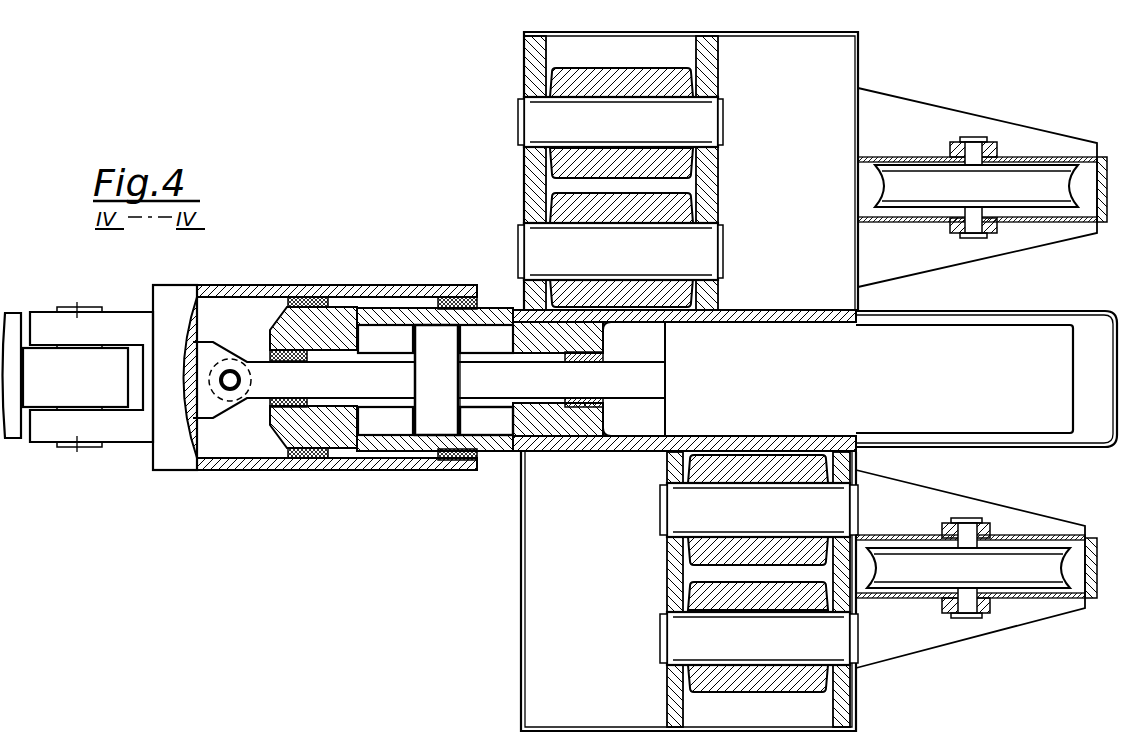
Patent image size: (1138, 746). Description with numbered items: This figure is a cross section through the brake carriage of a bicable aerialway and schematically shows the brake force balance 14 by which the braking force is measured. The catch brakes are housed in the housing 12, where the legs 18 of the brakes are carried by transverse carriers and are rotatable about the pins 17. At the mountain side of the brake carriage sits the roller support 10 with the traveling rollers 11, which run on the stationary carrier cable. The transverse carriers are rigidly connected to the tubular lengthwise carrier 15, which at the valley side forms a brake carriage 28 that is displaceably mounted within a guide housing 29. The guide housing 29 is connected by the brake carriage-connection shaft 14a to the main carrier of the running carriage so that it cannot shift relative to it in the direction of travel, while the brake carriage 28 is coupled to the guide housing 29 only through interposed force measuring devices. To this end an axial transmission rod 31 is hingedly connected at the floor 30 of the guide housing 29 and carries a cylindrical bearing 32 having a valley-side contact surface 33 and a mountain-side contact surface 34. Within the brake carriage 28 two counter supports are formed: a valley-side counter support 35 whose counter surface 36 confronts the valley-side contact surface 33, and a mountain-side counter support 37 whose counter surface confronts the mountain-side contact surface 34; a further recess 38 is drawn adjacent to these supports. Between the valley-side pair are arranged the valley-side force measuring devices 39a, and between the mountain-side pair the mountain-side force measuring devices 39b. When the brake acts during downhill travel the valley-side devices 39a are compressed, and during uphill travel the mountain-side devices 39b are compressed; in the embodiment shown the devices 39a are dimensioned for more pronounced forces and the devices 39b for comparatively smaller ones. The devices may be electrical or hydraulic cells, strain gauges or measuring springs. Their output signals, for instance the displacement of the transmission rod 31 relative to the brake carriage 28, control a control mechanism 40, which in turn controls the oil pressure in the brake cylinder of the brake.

The roller support 10 is at (933, 120).
The traveling roller 11 is at (1040, 180).
The housing 12 is at (858, 52).
The brake force balance 14 is at (364, 276).
The brake carriage-connection shaft 14a is at (60, 442).
The lengthwise carrier 15 is at (845, 312).
The pin 17 is at (540, 120).
The leg 18 is at (565, 80).
The brake carriage 28 is at (521, 447).
The guide housing 29 is at (240, 469).
The floor 30 is at (195, 425).
The axial transmission rod 31 is at (308, 385).
The cylindrical bearing 32 is at (443, 337).
The valley-side contact surface 33 is at (405, 330).
The mountain-side contact surface 34 is at (465, 340).
The valley-side counter support 35 is at (303, 330).
The counter surface 36 is at (373, 322).
The mountain-side counter support 37 is at (530, 320).
The chamber 38 is at (482, 420).
The valley-side force measuring device 39a is at (390, 338).
The mountain-side force measuring device 39b is at (437, 454).
The control mechanism 40 is at (1038, 357).